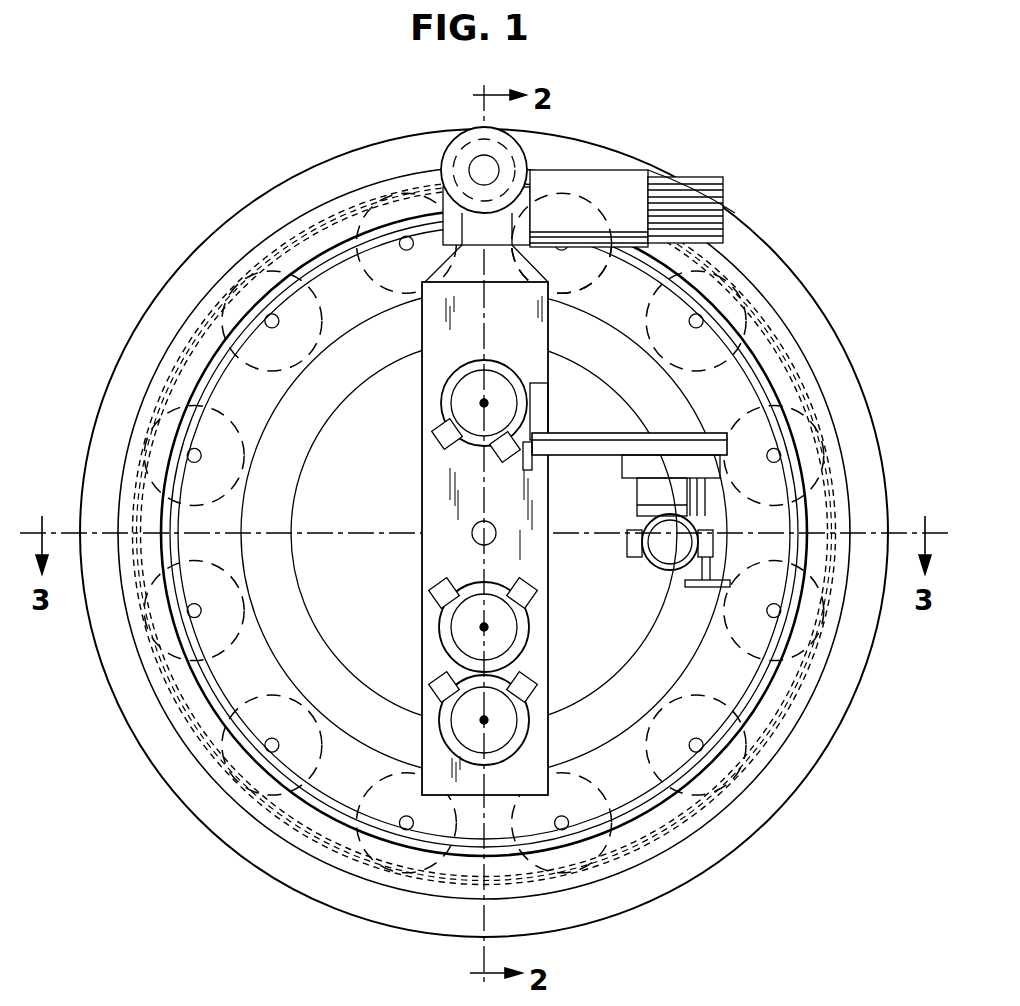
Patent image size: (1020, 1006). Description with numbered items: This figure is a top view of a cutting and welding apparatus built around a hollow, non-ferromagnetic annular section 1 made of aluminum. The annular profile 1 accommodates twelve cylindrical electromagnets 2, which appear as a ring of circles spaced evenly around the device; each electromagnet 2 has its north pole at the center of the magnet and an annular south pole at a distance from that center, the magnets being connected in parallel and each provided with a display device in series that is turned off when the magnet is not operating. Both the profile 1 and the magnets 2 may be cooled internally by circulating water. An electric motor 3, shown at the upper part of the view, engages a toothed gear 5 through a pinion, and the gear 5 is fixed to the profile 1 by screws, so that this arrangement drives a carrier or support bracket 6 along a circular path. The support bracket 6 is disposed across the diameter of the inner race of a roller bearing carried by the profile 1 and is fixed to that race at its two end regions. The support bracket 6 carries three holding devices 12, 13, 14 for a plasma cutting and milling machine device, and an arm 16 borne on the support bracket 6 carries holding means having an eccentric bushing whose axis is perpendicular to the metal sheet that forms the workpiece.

The annular section 1 is at (822, 357).
The cylindrical electromagnets 2 is at (852, 414).
The electric motor 3 is at (724, 178).
The gear 5 is at (790, 344).
The support bracket 6 is at (437, 500).
The holding device 12 is at (497, 720).
The holding device 13 is at (465, 628).
The holding device 14 is at (462, 405).
The arm 16 is at (590, 458).